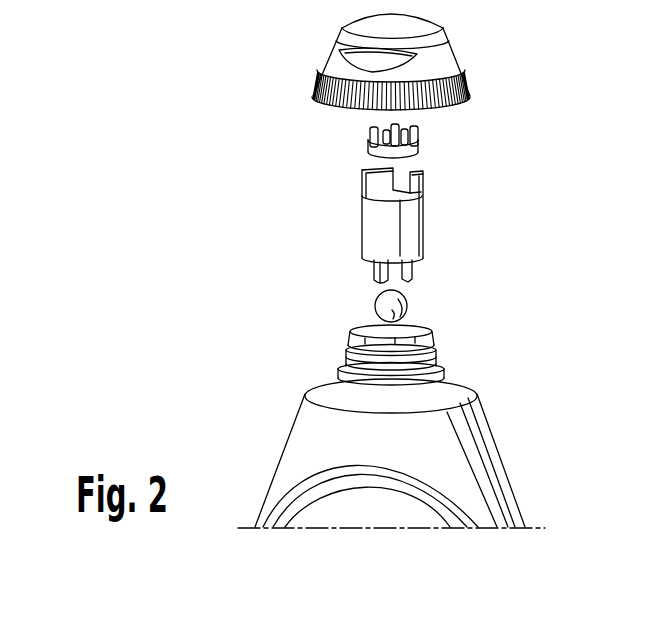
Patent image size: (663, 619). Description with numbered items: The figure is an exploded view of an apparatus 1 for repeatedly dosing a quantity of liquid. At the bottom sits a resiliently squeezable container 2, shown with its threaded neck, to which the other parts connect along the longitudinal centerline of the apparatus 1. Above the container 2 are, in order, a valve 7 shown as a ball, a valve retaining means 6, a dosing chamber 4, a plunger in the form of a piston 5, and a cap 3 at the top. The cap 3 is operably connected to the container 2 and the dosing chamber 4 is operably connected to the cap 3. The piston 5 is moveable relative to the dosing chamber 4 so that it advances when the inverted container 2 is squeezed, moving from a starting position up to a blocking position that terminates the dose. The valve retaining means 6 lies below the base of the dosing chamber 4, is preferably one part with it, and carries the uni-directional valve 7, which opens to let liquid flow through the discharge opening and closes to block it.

The apparatus 1 is at (251, 123).
The container 2 is at (504, 444).
The cap 3 is at (466, 51).
The dosing chamber 4 is at (430, 228).
The piston 5 is at (430, 150).
The valve retaining means 6 is at (413, 275).
The valve 7 is at (398, 302).